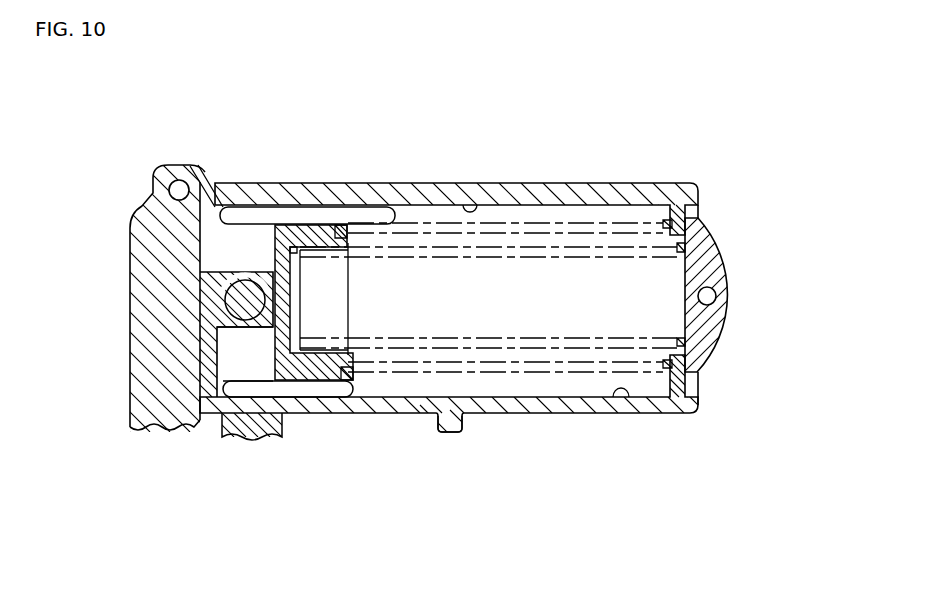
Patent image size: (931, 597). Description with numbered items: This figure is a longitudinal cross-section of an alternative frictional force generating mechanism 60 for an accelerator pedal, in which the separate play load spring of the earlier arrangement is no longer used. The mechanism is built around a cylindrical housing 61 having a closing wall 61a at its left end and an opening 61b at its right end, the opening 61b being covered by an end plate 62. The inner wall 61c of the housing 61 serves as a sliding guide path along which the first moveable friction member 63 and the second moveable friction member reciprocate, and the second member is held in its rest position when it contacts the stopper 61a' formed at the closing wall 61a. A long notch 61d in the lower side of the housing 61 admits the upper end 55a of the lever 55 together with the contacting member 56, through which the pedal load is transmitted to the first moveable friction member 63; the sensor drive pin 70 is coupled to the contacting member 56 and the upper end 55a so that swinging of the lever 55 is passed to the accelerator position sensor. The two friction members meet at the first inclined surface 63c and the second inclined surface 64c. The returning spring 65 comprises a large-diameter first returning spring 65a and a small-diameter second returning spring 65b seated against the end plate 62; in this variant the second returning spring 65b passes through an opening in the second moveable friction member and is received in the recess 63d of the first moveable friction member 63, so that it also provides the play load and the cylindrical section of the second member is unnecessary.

The lever 55 is at (222, 426).
The upper end of the lever 55a is at (240, 350).
The contacting member 56 is at (140, 232).
The frictional force generating mechanism 60 is at (466, 280).
The housing 61 is at (518, 183).
The closing wall 61a is at (137, 228).
The stopper 61a' is at (241, 258).
The opening 61b is at (698, 218).
The inner wall 61c is at (472, 198).
The notch 61d is at (401, 413).
The end plate 62 is at (722, 290).
The first moveable friction member 63 is at (224, 240).
The first inclined surface 63c is at (272, 268).
The recess 63d is at (244, 270).
The second inclined surface 64c is at (343, 232).
The returning spring 65 is at (544, 451).
The first returning spring 65a is at (497, 372).
The second returning spring 65b is at (562, 342).
The sensor drive pin 70 is at (207, 183).